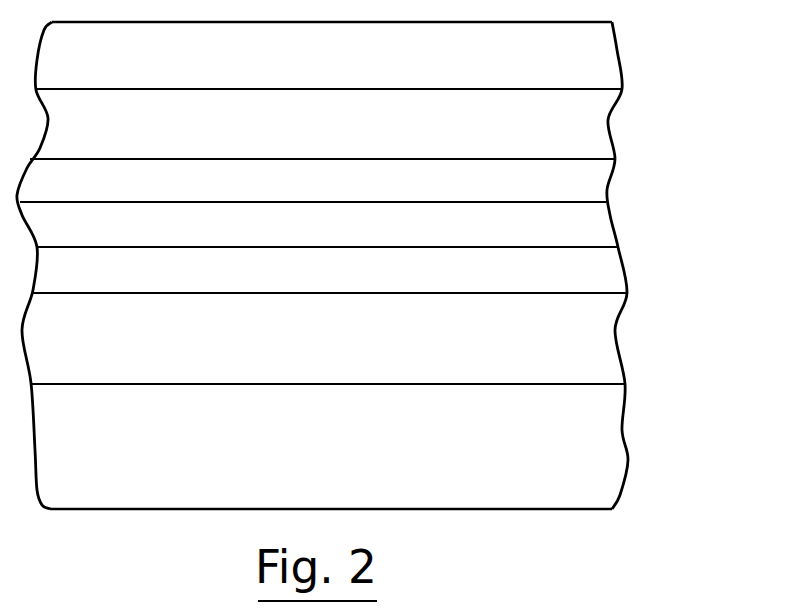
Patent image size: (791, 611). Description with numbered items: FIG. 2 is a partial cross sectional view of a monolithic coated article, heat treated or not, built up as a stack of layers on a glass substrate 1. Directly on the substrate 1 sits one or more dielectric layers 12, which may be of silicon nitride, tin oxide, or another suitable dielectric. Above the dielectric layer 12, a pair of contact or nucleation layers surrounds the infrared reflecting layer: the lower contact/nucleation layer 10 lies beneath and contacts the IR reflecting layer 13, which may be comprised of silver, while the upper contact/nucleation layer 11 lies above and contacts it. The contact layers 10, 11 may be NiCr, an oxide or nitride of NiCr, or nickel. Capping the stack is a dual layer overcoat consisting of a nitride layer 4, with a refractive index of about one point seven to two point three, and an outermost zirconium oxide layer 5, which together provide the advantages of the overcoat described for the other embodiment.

The ZrOx overcoat layer 5 is at (587, 58).
The nitride overcoat layer 4 is at (603, 112).
The upper contact/nucleation layer 11 is at (595, 177).
The IR reflecting layer 13 is at (593, 222).
The lower contact/nucleation layer 10 is at (588, 267).
The dielectric layer 12 is at (595, 355).
The substrate 1 is at (597, 477).